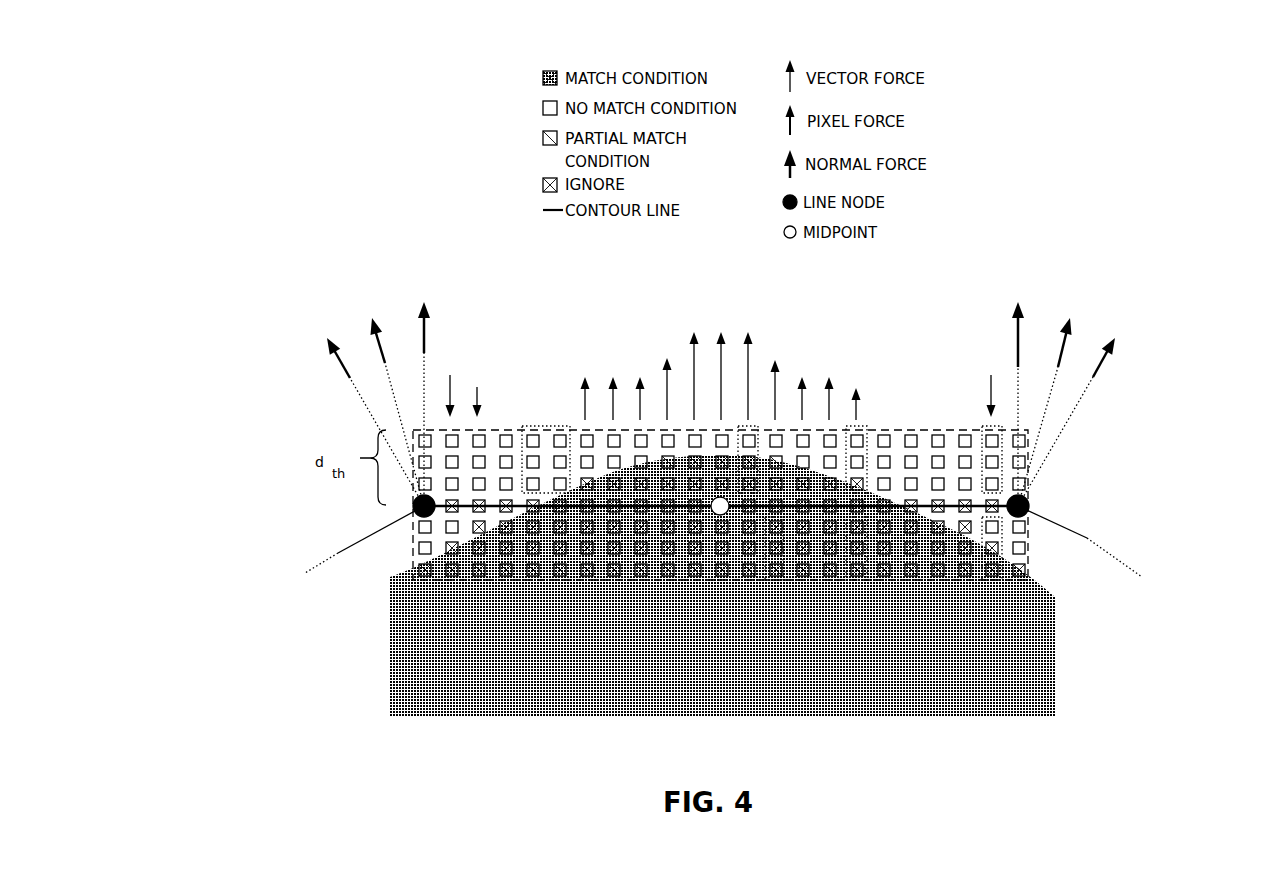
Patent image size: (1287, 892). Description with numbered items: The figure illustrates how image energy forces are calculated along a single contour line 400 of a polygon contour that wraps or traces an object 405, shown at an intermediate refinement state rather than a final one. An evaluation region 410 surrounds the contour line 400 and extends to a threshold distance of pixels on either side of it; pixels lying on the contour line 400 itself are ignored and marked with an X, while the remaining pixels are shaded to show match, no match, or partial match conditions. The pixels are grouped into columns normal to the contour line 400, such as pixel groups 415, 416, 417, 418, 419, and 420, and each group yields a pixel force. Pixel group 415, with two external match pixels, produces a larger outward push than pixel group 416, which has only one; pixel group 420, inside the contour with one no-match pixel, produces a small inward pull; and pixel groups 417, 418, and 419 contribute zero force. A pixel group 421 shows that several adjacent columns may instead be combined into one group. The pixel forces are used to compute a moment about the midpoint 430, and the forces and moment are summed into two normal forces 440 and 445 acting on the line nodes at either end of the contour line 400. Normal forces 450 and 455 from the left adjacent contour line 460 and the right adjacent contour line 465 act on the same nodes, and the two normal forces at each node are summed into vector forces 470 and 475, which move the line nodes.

The contour line 400 is at (978, 518).
The object 405 is at (722, 586).
The evaluation region 410 is at (513, 583).
The pixel group 415 is at (753, 426).
The pixel group 416 is at (863, 426).
The pixel group 417 is at (982, 426).
The pixel group 418 is at (780, 583).
The pixel group 419 is at (863, 583).
The pixel group 420 is at (1000, 585).
The pixel group 421 is at (547, 426).
The midpoint 430 is at (720, 515).
The normal force 440 is at (427, 308).
The normal force 445 is at (1013, 308).
The normal force 450 is at (327, 340).
The normal force 455 is at (1116, 340).
The left adjacent contour line 460 is at (335, 553).
The right adjacent contour line 465 is at (1048, 521).
The vector force 470 is at (373, 318).
The vector force 475 is at (1072, 318).